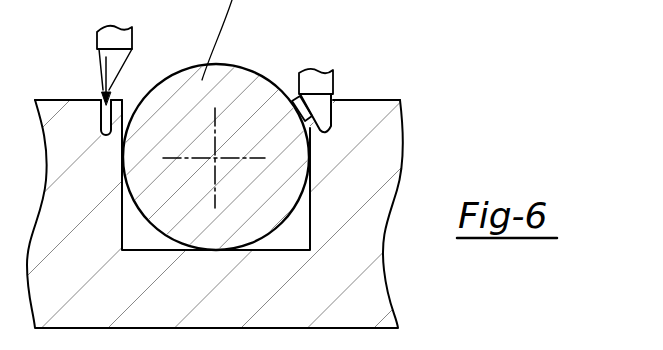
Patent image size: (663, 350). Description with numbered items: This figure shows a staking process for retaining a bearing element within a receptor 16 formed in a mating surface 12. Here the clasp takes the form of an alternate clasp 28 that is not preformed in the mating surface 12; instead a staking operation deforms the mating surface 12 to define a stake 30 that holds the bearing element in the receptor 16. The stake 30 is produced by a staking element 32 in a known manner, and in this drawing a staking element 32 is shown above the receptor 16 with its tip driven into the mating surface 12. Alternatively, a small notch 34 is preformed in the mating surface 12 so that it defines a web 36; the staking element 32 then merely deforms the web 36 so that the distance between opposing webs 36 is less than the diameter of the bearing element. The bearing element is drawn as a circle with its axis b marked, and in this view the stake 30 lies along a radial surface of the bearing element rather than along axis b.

The mating surface 12 is at (77, 100).
The receptor 16 is at (293, 230).
The alternate clasp 28 is at (351, 78).
The stake 30 is at (341, 92).
The staking element 32 is at (108, 33).
The notch 34 is at (100, 119).
The web 36 is at (117, 107).
The axis b is at (218, 158).